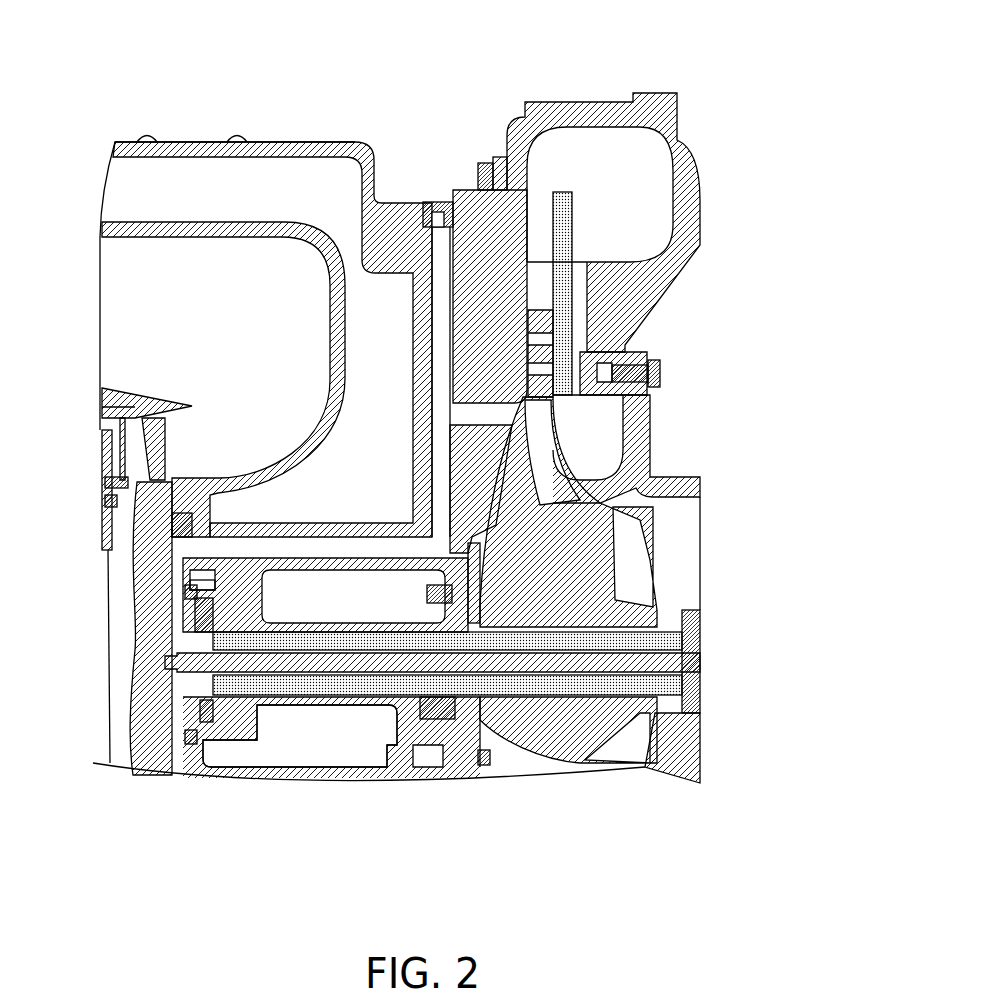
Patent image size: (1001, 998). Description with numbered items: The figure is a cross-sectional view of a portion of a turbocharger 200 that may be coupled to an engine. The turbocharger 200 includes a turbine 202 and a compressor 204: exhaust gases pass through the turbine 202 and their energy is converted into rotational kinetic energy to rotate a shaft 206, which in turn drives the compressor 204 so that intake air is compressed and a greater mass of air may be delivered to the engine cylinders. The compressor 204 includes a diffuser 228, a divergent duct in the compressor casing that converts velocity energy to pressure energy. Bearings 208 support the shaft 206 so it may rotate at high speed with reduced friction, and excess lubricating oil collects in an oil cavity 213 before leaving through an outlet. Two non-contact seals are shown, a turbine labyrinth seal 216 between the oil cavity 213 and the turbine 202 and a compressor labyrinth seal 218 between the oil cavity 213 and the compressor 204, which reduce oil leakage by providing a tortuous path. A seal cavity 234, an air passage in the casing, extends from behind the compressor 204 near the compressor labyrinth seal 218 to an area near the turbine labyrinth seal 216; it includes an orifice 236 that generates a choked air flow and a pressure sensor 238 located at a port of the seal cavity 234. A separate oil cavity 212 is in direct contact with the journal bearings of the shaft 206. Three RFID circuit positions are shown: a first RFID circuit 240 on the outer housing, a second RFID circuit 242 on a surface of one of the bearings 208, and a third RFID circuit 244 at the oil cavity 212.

The turbocharger 200 is at (226, 62).
The turbine 202 is at (68, 550).
The compressor 204 is at (722, 556).
The shaft 206 is at (683, 675).
The bearings 208 is at (463, 622).
The oil cavity 212 is at (205, 712).
The oil cavity 213 is at (320, 761).
The turbine labyrinth seal 216 is at (187, 592).
The compressor labyrinth seal 218 is at (483, 766).
The diffuser 228 is at (614, 171).
The seal cavity 234 is at (334, 558).
The orifice 236 is at (495, 425).
The pressure sensor 238 is at (455, 192).
The first RFID circuit 240 is at (326, 130).
The second RFID circuit 242 is at (204, 637).
The third RFID circuit 244 is at (466, 704).